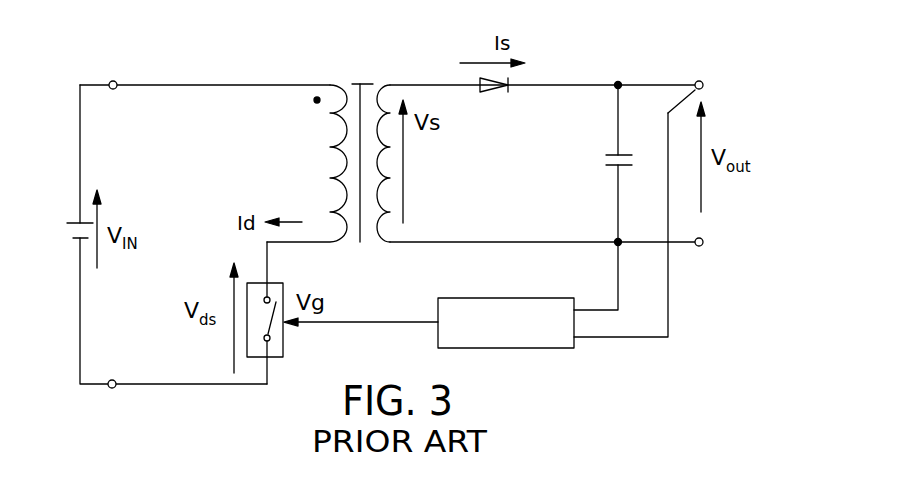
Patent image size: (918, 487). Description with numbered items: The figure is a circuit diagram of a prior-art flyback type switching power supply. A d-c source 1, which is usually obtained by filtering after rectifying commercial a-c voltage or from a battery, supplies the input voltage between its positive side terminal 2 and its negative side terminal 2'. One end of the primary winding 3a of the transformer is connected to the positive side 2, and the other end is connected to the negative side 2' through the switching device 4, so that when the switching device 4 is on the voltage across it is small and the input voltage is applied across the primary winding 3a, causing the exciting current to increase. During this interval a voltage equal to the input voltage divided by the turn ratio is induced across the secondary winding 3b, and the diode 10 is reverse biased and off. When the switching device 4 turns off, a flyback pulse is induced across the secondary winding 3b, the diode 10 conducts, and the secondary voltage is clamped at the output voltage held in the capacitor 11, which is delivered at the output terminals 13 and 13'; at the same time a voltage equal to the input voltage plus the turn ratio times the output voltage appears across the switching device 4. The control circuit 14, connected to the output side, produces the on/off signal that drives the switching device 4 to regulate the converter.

The d-c source 1 is at (73, 237).
The positive side terminal 2 is at (104, 64).
The negative side terminal 2' is at (104, 407).
The primary winding 3a is at (330, 162).
The secondary winding 3b is at (390, 197).
The switching device 4 is at (283, 342).
The diode 10 is at (487, 88).
The capacitor 11 is at (607, 163).
The output terminal 13 is at (707, 59).
The output terminal 13' is at (707, 268).
The control circuit 14 is at (518, 348).